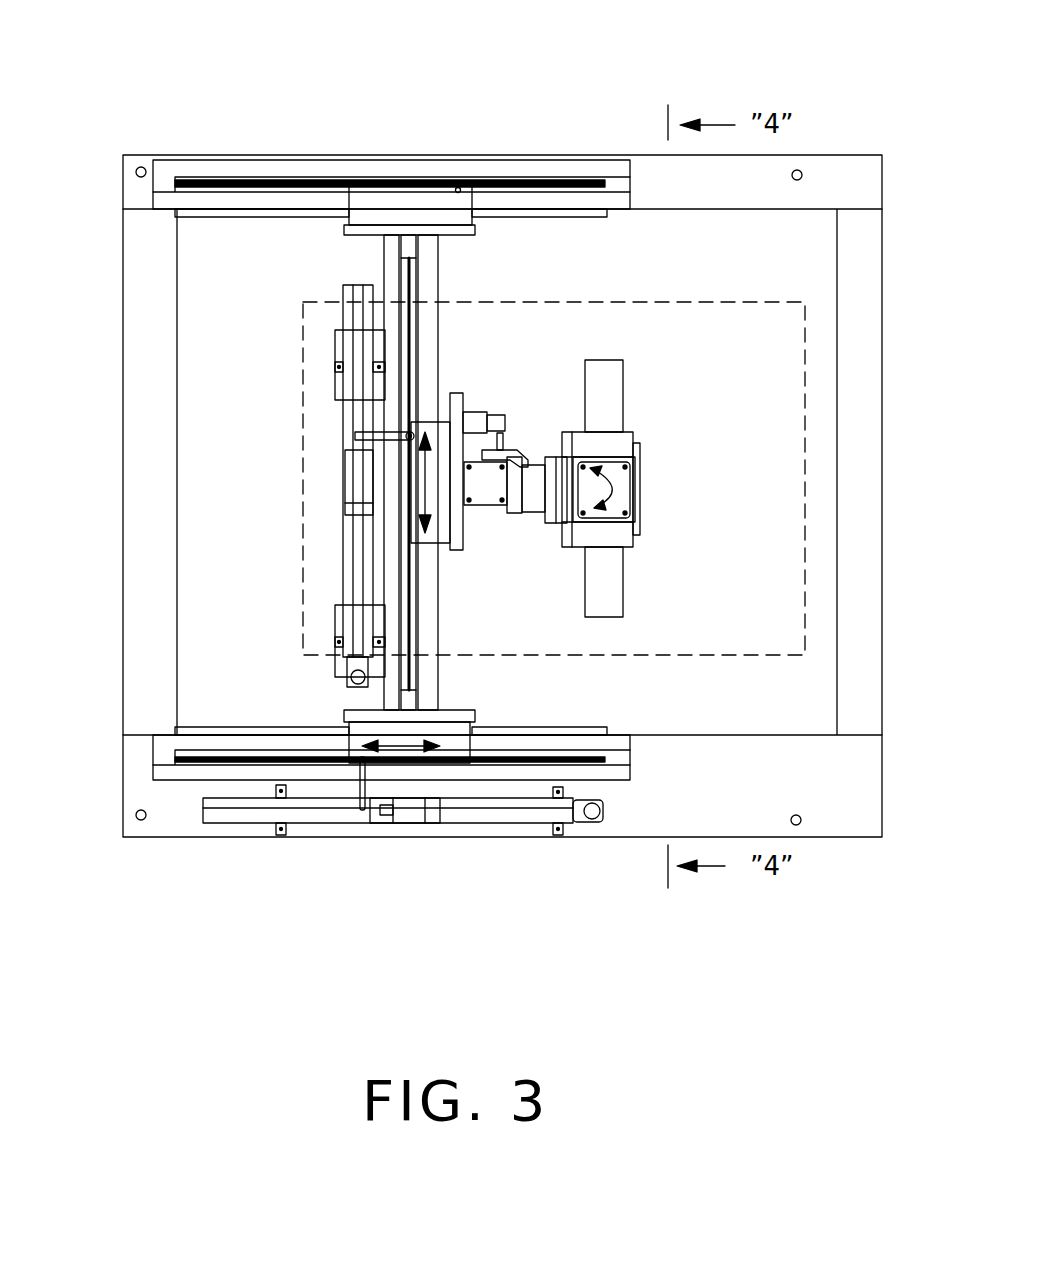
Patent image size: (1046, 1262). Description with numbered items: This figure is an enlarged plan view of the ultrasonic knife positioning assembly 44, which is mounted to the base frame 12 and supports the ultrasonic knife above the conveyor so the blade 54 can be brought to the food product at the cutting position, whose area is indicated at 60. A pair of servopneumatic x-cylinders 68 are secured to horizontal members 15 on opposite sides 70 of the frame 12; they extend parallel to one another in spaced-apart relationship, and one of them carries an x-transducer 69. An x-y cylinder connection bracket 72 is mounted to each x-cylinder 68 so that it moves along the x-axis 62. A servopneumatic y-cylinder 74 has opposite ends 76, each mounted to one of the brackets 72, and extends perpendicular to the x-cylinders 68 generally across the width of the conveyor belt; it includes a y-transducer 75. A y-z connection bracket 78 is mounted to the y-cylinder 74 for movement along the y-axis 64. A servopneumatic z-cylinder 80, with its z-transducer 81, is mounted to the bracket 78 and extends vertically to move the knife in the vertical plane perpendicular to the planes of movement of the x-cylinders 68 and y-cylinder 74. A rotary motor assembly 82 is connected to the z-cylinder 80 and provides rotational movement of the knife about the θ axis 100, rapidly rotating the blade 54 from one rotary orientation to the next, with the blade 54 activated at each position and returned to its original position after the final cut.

The base frame 12 is at (773, 208).
The horizontal members 15 is at (657, 202).
The ultrasonic knife positioning assembly 44 is at (265, 588).
The blade 54 is at (612, 582).
The area of the cutting position 60 is at (805, 540).
The x-axis 62 is at (395, 748).
The y-axis 64 is at (413, 497).
The servopneumatic x-cylinders 68 is at (218, 165).
The x-transducer 69 is at (413, 812).
The opposite sides 70 is at (717, 212).
The x-y cylinder connection bracket 72 is at (393, 200).
The servopneumatic y-cylinder 74 is at (427, 332).
The y-transducer 75 is at (345, 465).
The opposite ends 76 is at (425, 252).
The y-z connection bracket 78 is at (406, 434).
The servopneumatic z-cylinder 80 is at (487, 487).
The z-transducer 81 is at (477, 418).
The rotary motor assembly 82 is at (655, 550).
The θ axis 100 is at (640, 462).